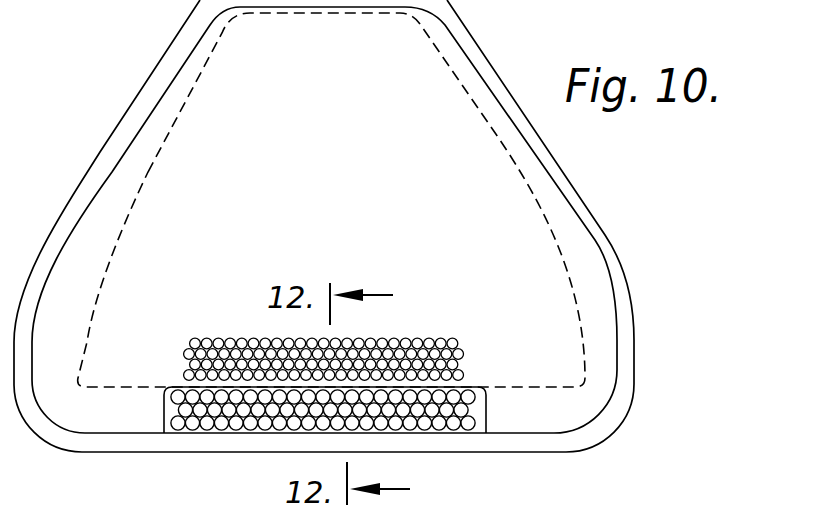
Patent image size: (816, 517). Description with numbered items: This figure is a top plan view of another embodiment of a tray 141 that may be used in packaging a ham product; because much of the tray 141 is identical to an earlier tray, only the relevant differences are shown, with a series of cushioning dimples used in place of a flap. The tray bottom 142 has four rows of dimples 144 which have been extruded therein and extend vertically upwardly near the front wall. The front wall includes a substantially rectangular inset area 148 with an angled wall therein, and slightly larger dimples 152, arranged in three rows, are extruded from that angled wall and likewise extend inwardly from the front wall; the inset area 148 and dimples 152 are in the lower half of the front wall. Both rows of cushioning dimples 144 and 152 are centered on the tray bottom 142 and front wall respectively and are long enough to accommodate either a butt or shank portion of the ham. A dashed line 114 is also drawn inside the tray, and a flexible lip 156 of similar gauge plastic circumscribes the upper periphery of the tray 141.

The inner liner 114 is at (425, 60).
The tray 141 is at (362, 226).
The tray bottom 142 is at (579, 255).
The lip 156 is at (627, 325).
The dimples 144 is at (452, 342).
The inset area 148 is at (324, 439).
The larger dimples 152 is at (180, 430).